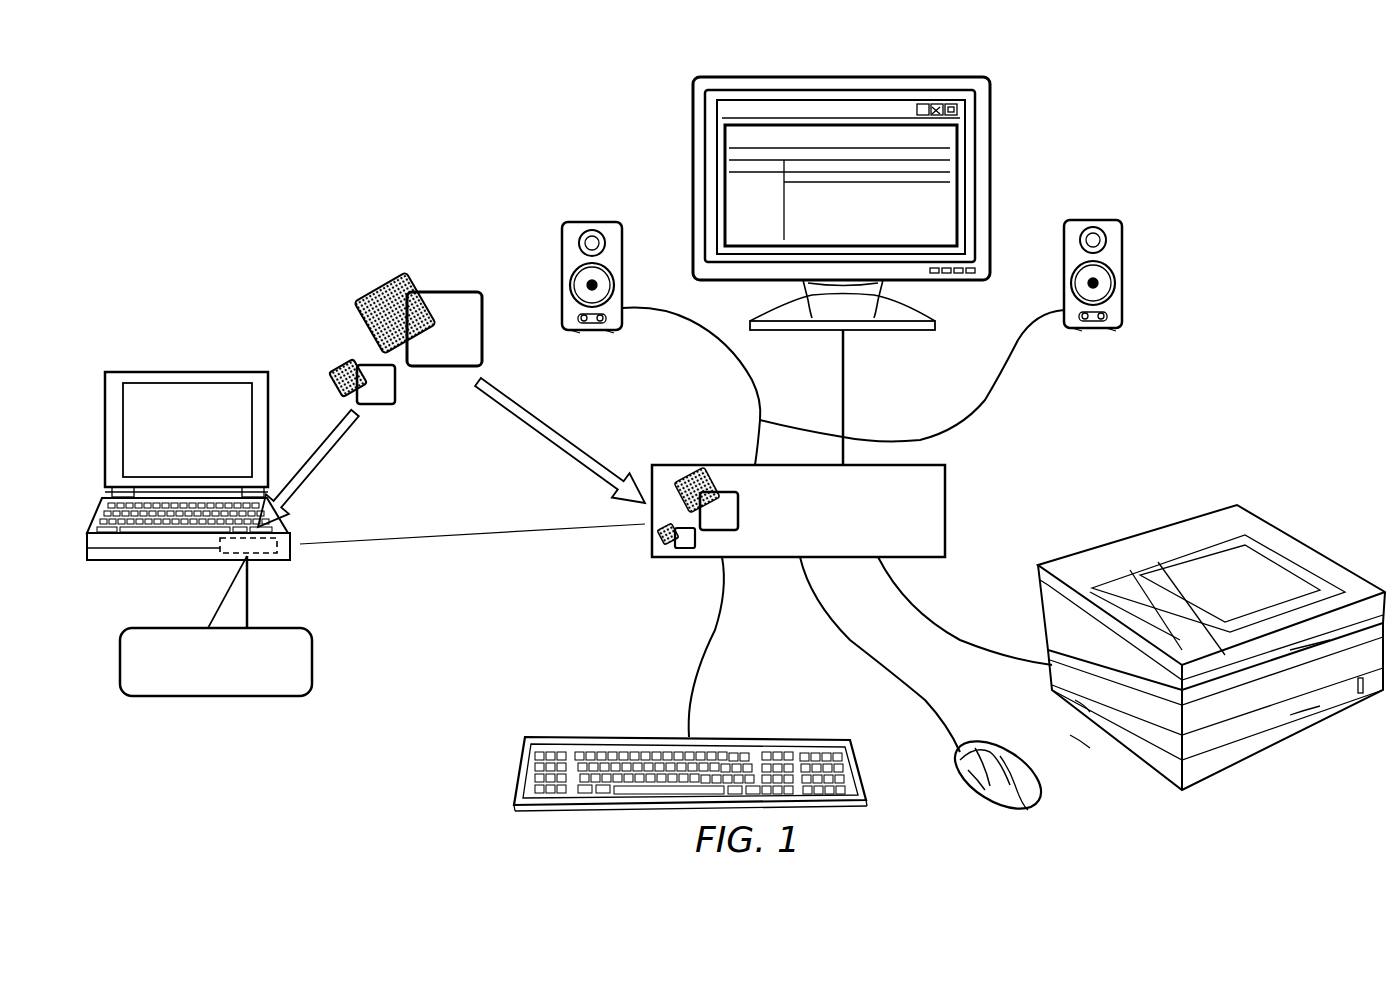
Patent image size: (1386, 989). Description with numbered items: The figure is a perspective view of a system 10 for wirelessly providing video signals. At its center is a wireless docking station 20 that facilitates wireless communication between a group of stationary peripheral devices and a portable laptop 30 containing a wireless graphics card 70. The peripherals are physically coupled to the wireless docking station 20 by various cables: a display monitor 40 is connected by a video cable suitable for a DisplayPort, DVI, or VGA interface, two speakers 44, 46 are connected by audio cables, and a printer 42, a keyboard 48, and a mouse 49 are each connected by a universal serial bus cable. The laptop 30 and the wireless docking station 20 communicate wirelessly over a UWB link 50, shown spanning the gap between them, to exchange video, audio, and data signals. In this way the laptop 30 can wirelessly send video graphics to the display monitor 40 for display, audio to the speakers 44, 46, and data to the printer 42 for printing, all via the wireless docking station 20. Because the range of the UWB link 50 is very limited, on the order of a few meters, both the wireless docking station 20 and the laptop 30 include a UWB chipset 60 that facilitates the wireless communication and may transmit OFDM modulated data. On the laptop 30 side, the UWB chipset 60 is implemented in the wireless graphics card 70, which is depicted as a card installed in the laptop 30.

The system 10 is at (458, 126).
The wireless docking station 20 is at (946, 501).
The laptop 30 is at (199, 446).
The display monitor 40 is at (845, 77).
The printer 42 is at (1283, 745).
The speaker 44 is at (590, 222).
The speaker 46 is at (1098, 220).
The keyboard 48 is at (518, 763).
The mouse 49 is at (1038, 790).
The UWB link 50 is at (440, 546).
The UWB chipset 60 is at (440, 396).
The wireless graphics card 70 is at (121, 665).